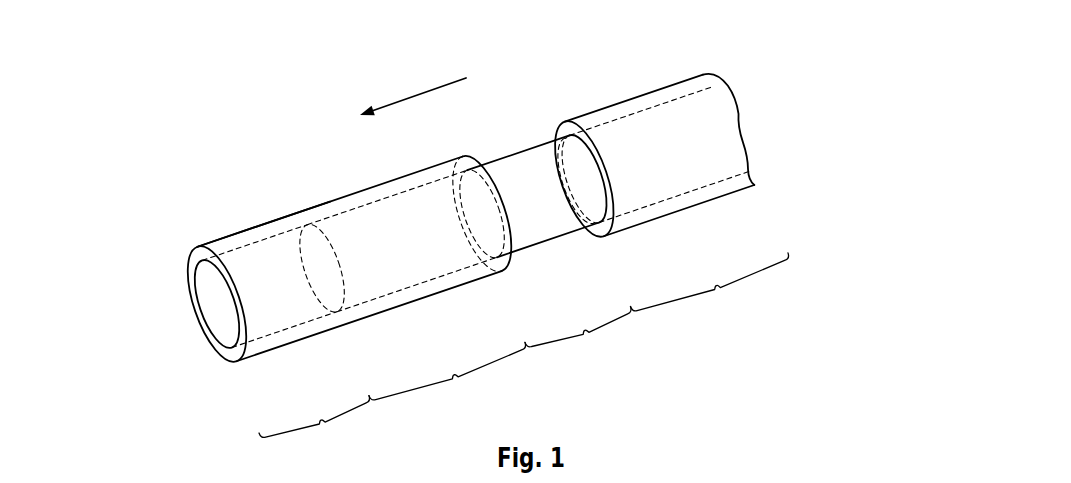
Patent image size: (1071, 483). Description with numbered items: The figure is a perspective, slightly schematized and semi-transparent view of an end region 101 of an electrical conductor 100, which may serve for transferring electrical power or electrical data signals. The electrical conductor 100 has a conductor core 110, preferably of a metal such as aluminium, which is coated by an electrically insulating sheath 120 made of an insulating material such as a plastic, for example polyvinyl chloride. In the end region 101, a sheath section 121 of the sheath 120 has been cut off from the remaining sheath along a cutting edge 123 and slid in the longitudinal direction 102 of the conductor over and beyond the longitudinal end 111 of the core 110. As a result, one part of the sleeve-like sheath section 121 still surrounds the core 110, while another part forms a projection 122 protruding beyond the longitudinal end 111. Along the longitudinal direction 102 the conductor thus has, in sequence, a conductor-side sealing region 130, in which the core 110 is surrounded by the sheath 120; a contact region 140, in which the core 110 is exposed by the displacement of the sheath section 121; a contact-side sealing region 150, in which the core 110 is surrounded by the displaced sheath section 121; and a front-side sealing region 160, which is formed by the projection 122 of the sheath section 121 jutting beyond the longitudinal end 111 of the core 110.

The electrical conductor 100 is at (223, 82).
The end region 101 is at (469, 203).
The longitudinal direction 102 is at (425, 93).
The conductor core 110 is at (518, 165).
The longitudinal end 111 is at (328, 290).
The sheath 120 is at (334, 203).
The sheath section 121 is at (267, 227).
The projection 122 is at (225, 242).
The cutting edge 123 is at (503, 263).
The conductor-side sealing region 130 is at (710, 288).
The contact region 140 is at (578, 336).
The contact-side sealing region 150 is at (447, 378).
The front-side sealing region 160 is at (314, 426).